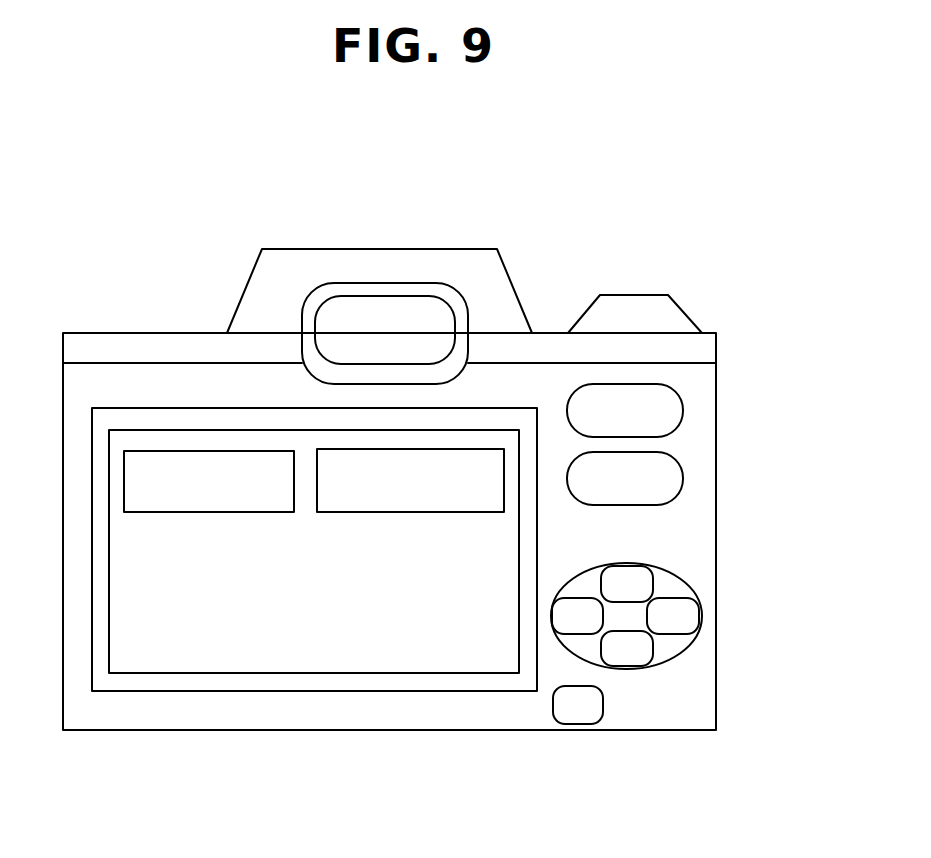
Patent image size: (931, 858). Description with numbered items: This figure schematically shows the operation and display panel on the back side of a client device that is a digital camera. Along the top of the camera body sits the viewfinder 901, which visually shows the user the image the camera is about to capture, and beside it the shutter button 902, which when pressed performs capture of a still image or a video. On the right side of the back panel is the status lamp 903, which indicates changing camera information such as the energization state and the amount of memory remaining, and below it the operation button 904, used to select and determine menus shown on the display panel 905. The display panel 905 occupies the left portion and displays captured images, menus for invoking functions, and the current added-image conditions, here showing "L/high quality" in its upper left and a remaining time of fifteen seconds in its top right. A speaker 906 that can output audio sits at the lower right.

The viewfinder 901 is at (413, 302).
The shutter button 902 is at (643, 303).
The status lamp 903 is at (682, 476).
The operation button 904 is at (680, 580).
The display panel 905 is at (412, 660).
The speaker 906 is at (585, 725).